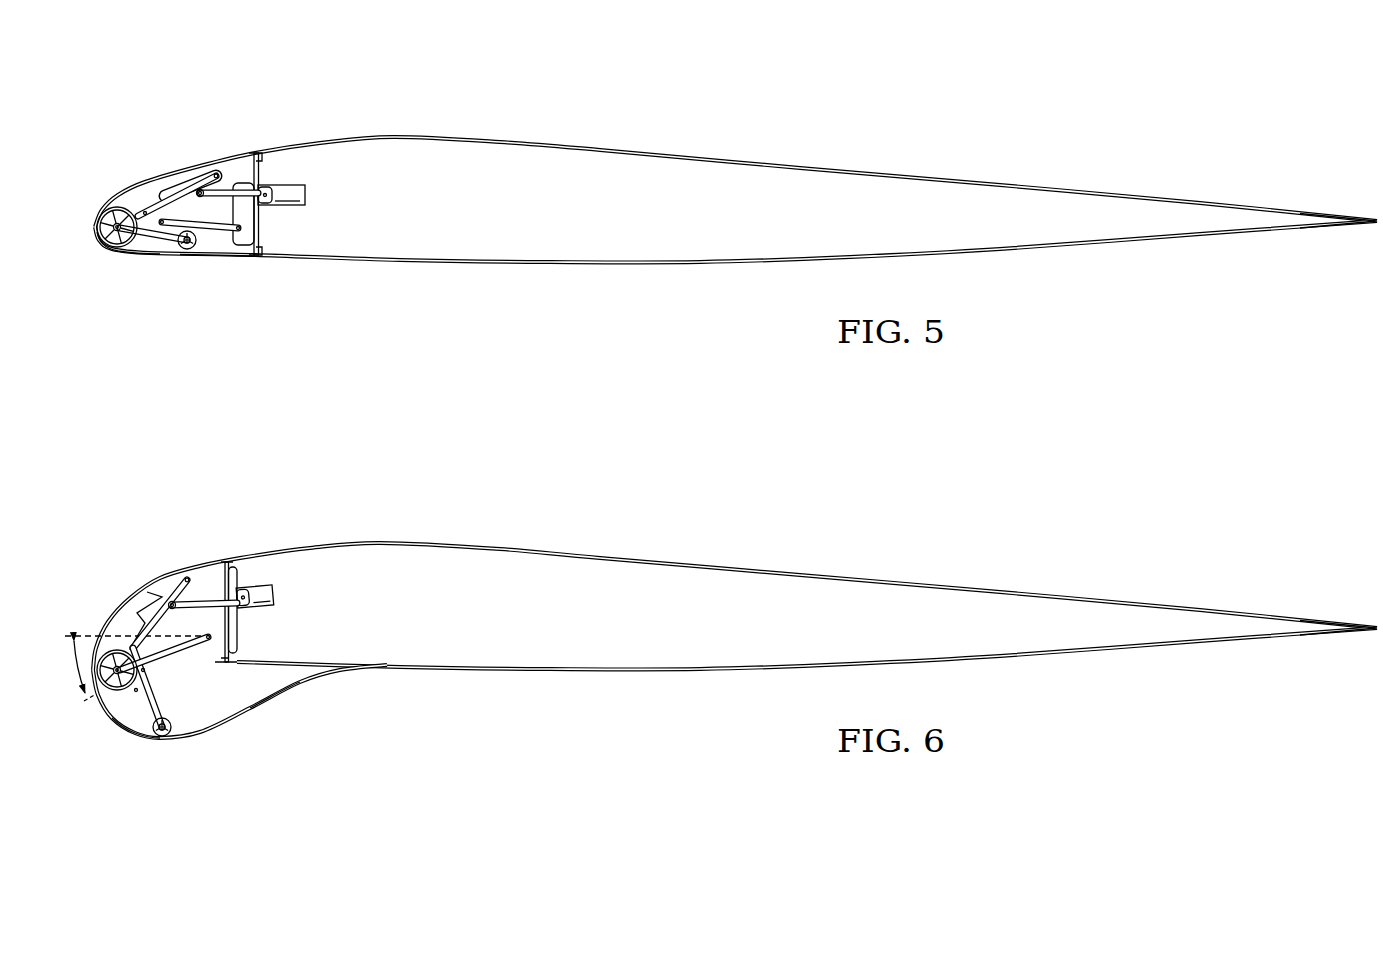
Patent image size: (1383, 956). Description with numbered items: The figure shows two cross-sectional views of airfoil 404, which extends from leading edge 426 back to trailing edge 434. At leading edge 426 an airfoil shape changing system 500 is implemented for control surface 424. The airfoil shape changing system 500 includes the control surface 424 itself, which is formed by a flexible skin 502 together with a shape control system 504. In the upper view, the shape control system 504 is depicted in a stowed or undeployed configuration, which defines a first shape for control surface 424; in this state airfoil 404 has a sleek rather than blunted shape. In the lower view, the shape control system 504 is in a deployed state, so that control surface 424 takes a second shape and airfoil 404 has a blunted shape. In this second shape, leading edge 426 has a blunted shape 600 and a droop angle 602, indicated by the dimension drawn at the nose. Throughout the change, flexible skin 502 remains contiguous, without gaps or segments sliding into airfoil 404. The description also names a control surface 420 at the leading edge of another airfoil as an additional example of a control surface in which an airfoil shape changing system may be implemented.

In FIG. 5, the airfoil 404 is at (456, 138).
In FIG. 6, the airfoil 404 is at (445, 540).
In FIG. 5, the trailing edge 434 is at (1313, 214).
In FIG. 6, the trailing edge 434 is at (1311, 621).
In FIG. 5, the airfoil shape changing system 500 is at (193, 177).
In FIG. 6, the airfoil shape changing system 500 is at (174, 622).
In FIG. 5, the flexible skin 502 is at (227, 260).
In FIG. 6, the flexible skin 502 is at (272, 694).
In FIG. 5, the shape control system 504 is at (144, 264).
In FIG. 6, the shape control system 504 is at (172, 760).
In FIG. 5, the control surface 424 is at (170, 178).
In FIG. 6, the control surface 424 is at (137, 583).
In FIG. 5, the leading edge 426 is at (94, 223).
In FIG. 6, the leading edge 426 is at (88, 650).
In FIG. 6, the control surface 420 is at (212, 562).
In FIG. 6, the blunted shape 600 is at (139, 734).
In FIG. 6, the droop angle 602 is at (75, 702).